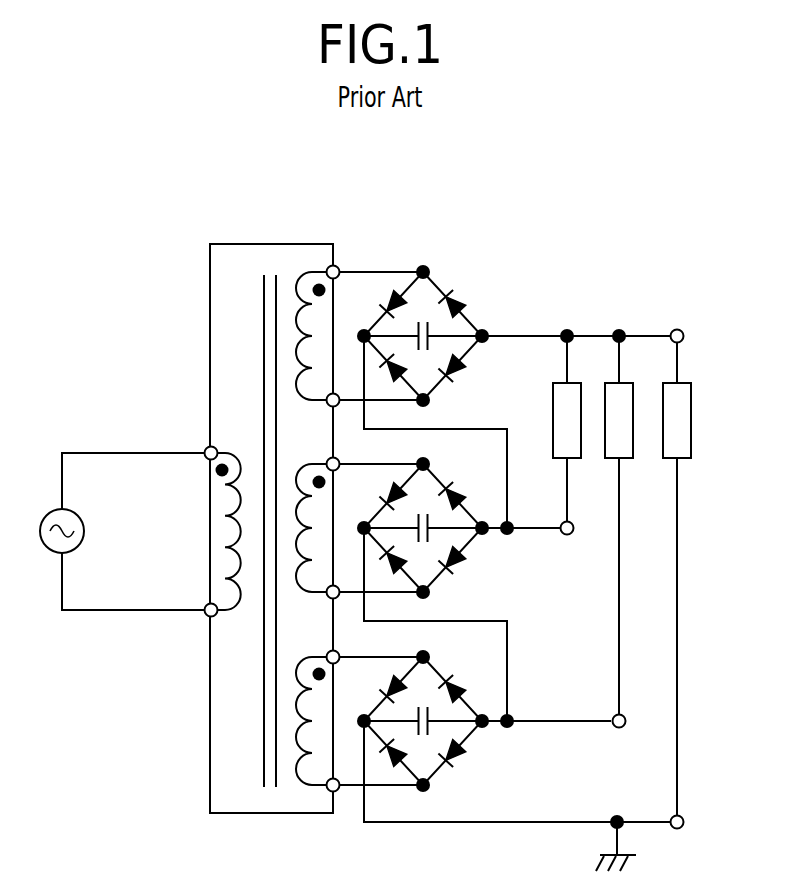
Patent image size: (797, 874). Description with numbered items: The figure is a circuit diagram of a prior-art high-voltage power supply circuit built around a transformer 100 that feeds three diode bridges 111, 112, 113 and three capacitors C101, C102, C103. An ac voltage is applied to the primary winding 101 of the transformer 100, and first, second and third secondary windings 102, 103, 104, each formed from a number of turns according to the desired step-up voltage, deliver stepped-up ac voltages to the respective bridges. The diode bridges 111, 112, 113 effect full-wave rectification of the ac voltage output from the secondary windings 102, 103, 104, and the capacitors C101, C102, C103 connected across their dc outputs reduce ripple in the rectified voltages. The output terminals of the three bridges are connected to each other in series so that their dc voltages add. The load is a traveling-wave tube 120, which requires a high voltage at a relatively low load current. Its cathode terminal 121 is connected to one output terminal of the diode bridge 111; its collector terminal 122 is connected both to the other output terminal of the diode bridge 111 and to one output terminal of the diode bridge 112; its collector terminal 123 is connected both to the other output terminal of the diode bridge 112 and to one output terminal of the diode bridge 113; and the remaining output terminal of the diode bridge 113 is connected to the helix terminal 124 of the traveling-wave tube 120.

The transformer 100 is at (211, 259).
The primary winding 101 is at (232, 615).
The first secondary winding 102 is at (334, 264).
The second secondary winding 103 is at (305, 592).
The third secondary winding 104 is at (306, 785).
The diode bridge 111 is at (448, 277).
The diode bridge 112 is at (446, 580).
The diode bridge 113 is at (441, 777).
The capacitor C101 is at (430, 323).
The capacitor C102 is at (429, 514).
The capacitor C103 is at (429, 706).
The traveling-wave tube 120 is at (705, 421).
The cathode terminal 121 is at (684, 336).
The collector terminal 122 is at (573, 528).
The collector terminal 123 is at (626, 721).
The helix terminal 124 is at (684, 821).